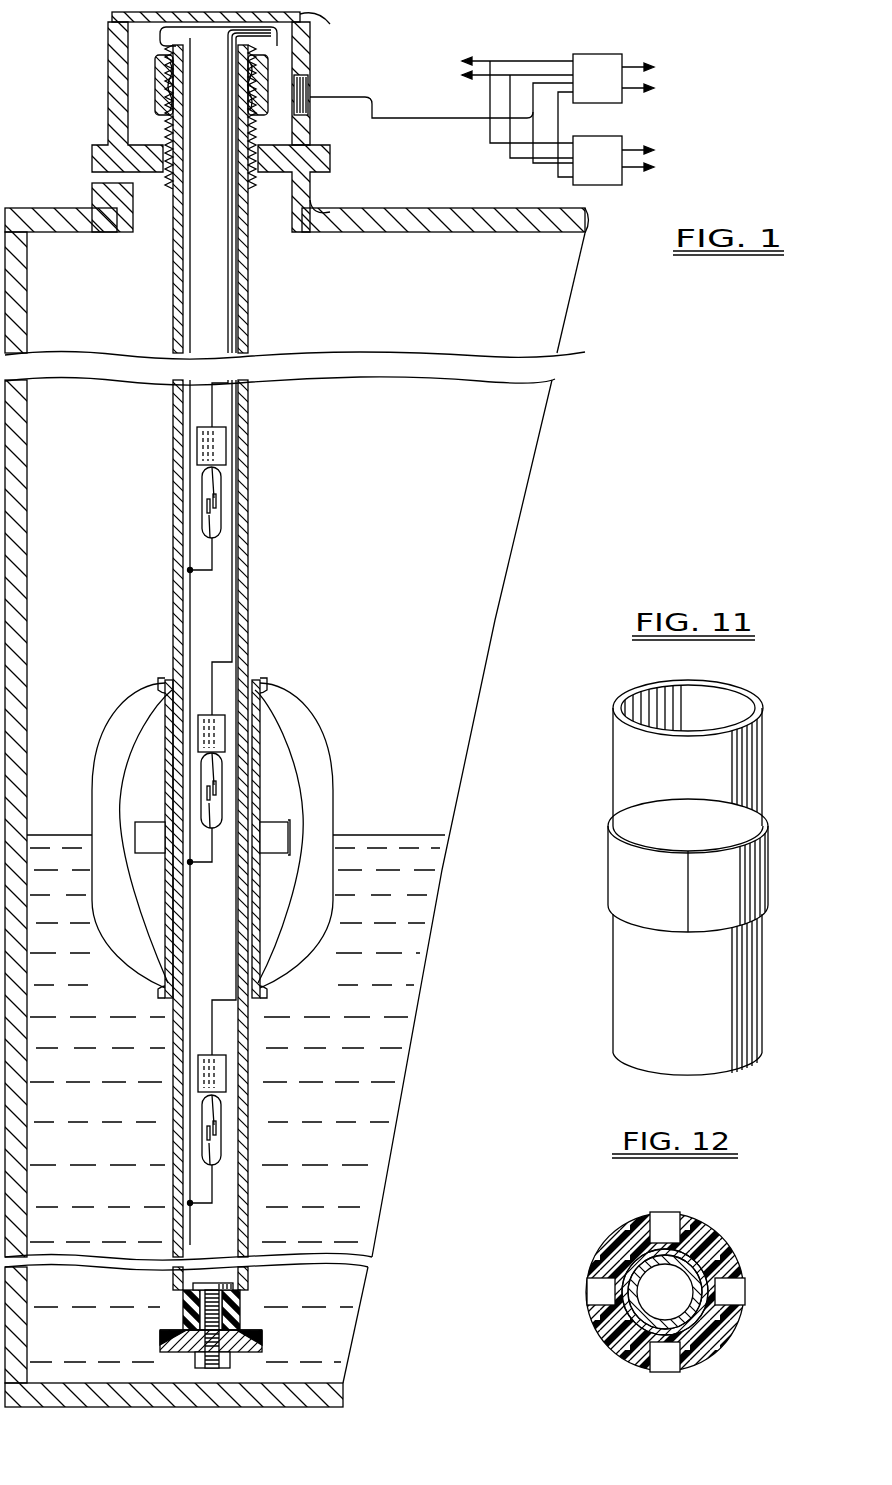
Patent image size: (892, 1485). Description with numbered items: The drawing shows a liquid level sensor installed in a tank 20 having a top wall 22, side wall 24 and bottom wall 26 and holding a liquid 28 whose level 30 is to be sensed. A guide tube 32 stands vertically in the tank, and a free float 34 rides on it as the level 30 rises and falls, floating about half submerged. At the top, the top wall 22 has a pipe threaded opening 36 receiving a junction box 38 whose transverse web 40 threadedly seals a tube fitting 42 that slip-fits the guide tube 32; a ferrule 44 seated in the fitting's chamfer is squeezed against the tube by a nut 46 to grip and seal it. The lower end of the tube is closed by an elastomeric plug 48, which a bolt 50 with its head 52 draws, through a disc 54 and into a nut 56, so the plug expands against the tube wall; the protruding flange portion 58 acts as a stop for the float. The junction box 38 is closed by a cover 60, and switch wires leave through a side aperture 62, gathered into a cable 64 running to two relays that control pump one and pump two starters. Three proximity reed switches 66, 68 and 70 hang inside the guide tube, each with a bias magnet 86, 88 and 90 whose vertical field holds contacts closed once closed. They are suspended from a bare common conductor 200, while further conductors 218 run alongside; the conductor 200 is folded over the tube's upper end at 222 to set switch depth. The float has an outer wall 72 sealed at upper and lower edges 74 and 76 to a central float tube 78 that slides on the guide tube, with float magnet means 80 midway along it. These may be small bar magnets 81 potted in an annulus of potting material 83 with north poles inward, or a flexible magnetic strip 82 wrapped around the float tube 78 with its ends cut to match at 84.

In FIG. 1, the tank 20 is at (462, 536).
In FIG. 1, the top wall 22 is at (478, 203).
In FIG. 1, the side wall 24 is at (27, 322).
In FIG. 1, the bottom wall 26 is at (333, 1394).
In FIG. 1, the liquid 28 is at (395, 1040).
In FIG. 1, the liquid level 30 is at (428, 835).
In FIG. 1, the guide tube 32 is at (248, 305).
In FIG. 12, the guide tube 32 is at (695, 1320).
In FIG. 1, the float 34 is at (313, 723).
In FIG. 1, the pipe threaded opening 36 is at (113, 186).
In FIG. 1, the junction box 38 is at (108, 118).
In FIG. 1, the transverse web 40 is at (280, 160).
In FIG. 1, the tube fitting 42 is at (258, 138).
In FIG. 1, the ferrule 44 is at (168, 75).
In FIG. 1, the nut 46 is at (157, 62).
In FIG. 1, the elastomeric plug 48 is at (240, 1305).
In FIG. 1, the bolt 50 is at (185, 1305).
In FIG. 1, the bolt head 52 is at (225, 1285).
In FIG. 1, the disc 54 is at (260, 1346).
In FIG. 1, the nut 56 is at (230, 1360).
In FIG. 1, the flange portion 58 is at (172, 1333).
In FIG. 1, the cover 60 is at (331, 30).
In FIG. 1, the side opening aperture 62 is at (305, 95).
In FIG. 1, the cable 64 is at (424, 118).
In FIG. 1, the proximity switch 66 is at (222, 1150).
In FIG. 1, the proximity switch 68 is at (223, 800).
In FIG. 1, the proximity switch 70 is at (222, 522).
In FIG. 1, the outer wall 72 is at (315, 757).
In FIG. 1, the upper edge 74 is at (258, 672).
In FIG. 1, the lower edge 76 is at (262, 996).
In FIG. 1, the float tube 78 is at (255, 720).
In FIG. 11, the float tube 78 is at (748, 772).
In FIG. 12, the float tube 78 is at (705, 1270).
In FIG. 1, the float magnet means 80 is at (285, 826).
In FIG. 1, the bar magnets 81 is at (135, 830).
In FIG. 12, the bar magnets 81 is at (671, 1218).
In FIG. 11, the magnetic strip 82 is at (753, 882).
In FIG. 12, the potting material 83 is at (715, 1238).
In FIG. 11, the matched ends 84 is at (690, 858).
In FIG. 1, the bias magnet 86 is at (226, 1066).
In FIG. 1, the bias magnet 88 is at (198, 735).
In FIG. 1, the bias magnet 90 is at (222, 448).
In FIG. 1, the common conductor 200 is at (200, 603).
In FIG. 1, the conductors 218 is at (225, 592).
In FIG. 1, the folded-over portion 222 is at (160, 36).